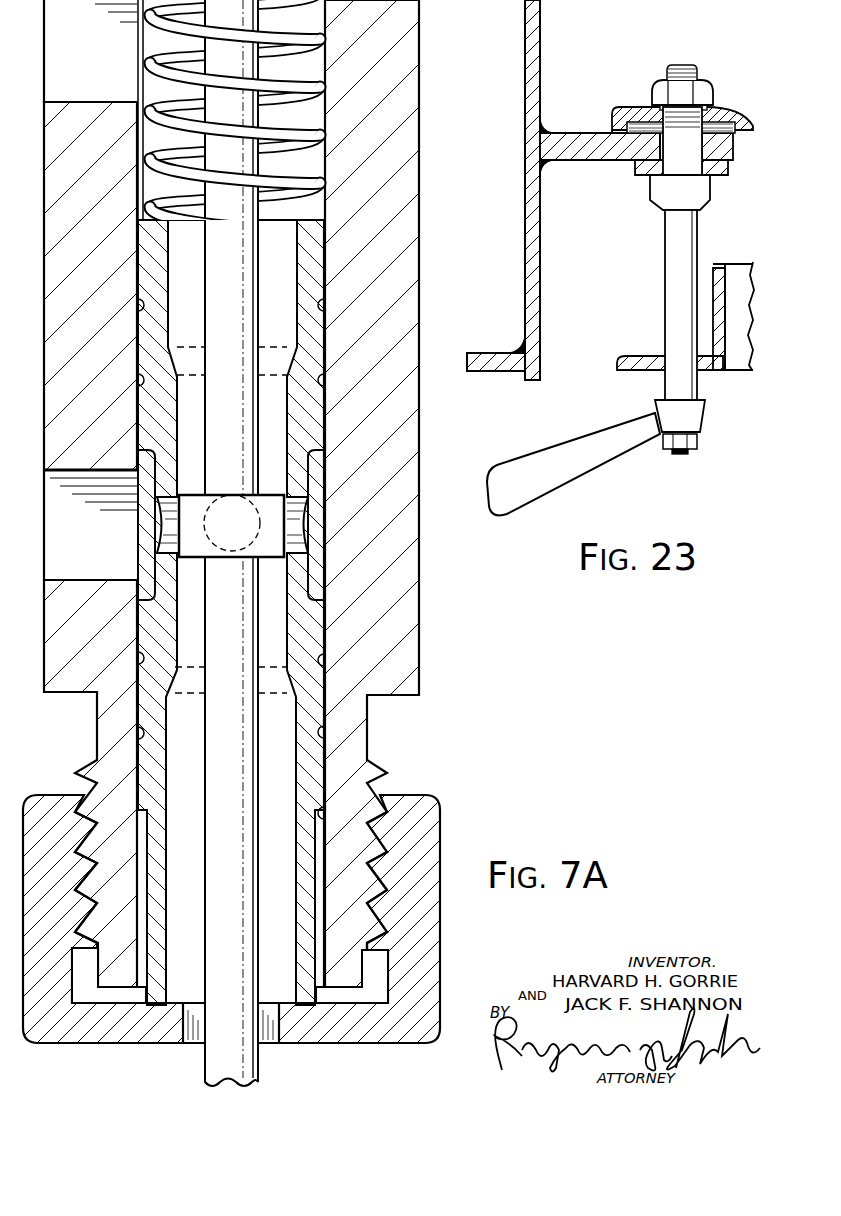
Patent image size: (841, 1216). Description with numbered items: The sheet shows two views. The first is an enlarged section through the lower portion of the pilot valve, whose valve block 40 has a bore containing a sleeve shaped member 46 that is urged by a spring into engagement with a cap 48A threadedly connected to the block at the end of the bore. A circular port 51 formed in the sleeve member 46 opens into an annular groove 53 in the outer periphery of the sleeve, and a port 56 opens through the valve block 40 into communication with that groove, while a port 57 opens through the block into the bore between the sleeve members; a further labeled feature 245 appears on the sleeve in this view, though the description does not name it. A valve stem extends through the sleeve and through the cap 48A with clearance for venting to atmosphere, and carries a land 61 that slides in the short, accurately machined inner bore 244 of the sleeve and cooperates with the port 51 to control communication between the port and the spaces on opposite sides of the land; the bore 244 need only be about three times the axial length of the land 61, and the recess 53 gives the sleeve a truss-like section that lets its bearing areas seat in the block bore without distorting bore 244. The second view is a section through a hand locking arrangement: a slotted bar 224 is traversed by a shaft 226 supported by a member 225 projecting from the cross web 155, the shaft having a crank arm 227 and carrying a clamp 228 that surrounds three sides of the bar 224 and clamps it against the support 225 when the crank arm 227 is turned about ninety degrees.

In FIG. 7A, the valve block 40 is at (420, 655).
In FIG. 7A, the sleeve shaped member 46 is at (318, 275).
In FIG. 7A, the cap 48A is at (439, 805).
In FIG. 7A, the circular port 51 is at (165, 547).
In FIG. 7A, the annular groove 53 is at (318, 500).
In FIG. 7A, the port 56 is at (84, 580).
In FIG. 7A, the port 57 is at (103, 102).
In FIG. 7A, the land 61 is at (187, 495).
In FIG. 7A, the inner bore of the sleeve 244 is at (187, 376).
In FIG. 7A, the port 245 is at (136, 306).
In FIG. 23, the cross web 155 is at (541, 304).
In FIG. 23, the slotted bar 224 is at (720, 125).
In FIG. 23, the member 225 is at (585, 133).
In FIG. 23, the shaft 226 is at (665, 238).
In FIG. 23, the crank arm 227 is at (550, 446).
In FIG. 23, the clamp 228 is at (627, 107).